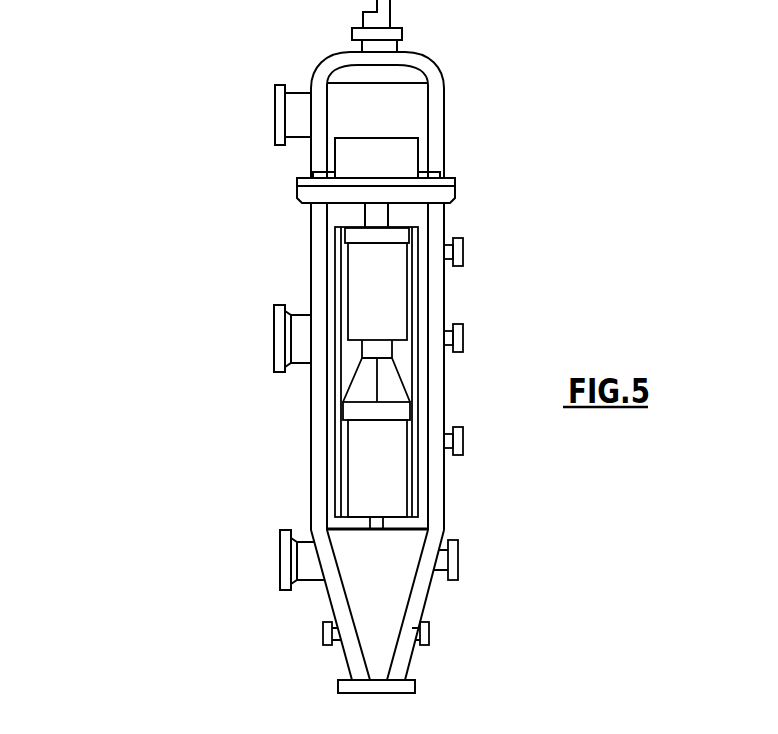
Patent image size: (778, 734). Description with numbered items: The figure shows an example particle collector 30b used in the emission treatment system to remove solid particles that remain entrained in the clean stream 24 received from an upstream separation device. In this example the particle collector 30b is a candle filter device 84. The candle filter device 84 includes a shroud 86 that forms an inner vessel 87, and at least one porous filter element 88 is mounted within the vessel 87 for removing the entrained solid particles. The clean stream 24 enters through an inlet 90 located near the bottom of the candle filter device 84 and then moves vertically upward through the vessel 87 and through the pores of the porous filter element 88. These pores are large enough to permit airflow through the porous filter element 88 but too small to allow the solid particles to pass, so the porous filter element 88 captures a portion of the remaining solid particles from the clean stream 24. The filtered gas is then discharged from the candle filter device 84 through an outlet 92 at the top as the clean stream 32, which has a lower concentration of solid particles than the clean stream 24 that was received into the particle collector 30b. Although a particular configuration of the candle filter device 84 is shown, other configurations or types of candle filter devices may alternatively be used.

The outlet 92 is at (278, 85).
The clean stream 32 is at (243, 120).
The candle filter device 84 is at (311, 247).
The porous filter element 88 is at (360, 265).
The inner vessel 87 is at (352, 352).
The particle collector 30b is at (218, 443).
The clean stream 24 is at (253, 562).
The inlet 90 is at (284, 590).
The shroud 86 is at (444, 492).